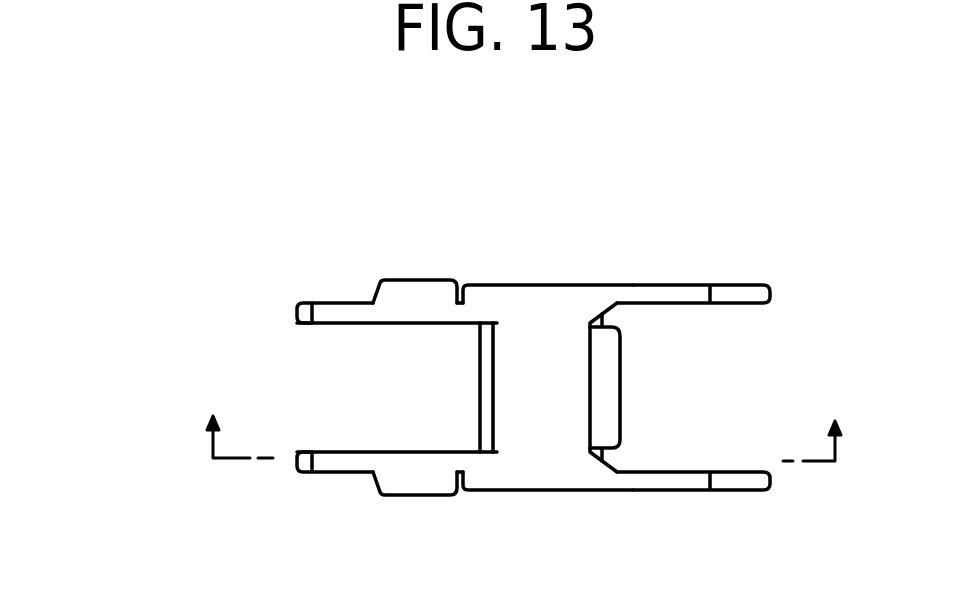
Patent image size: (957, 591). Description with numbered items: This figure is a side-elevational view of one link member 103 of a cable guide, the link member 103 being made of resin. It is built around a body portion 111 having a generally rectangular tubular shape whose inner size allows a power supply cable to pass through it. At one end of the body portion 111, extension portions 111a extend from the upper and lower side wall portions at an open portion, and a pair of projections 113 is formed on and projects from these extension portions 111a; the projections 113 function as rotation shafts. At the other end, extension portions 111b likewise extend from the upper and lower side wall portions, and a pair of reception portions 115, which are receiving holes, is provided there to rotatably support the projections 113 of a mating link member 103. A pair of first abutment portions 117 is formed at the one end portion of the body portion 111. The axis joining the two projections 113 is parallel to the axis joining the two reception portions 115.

The link member 103 is at (148, 323).
The body portion 111 is at (528, 285).
The extension portions 111a is at (331, 303).
The extension portions 111b is at (745, 285).
The projections 113 is at (415, 280).
The reception portions 115 is at (631, 290).
The first abutment portions 117 is at (296, 320).